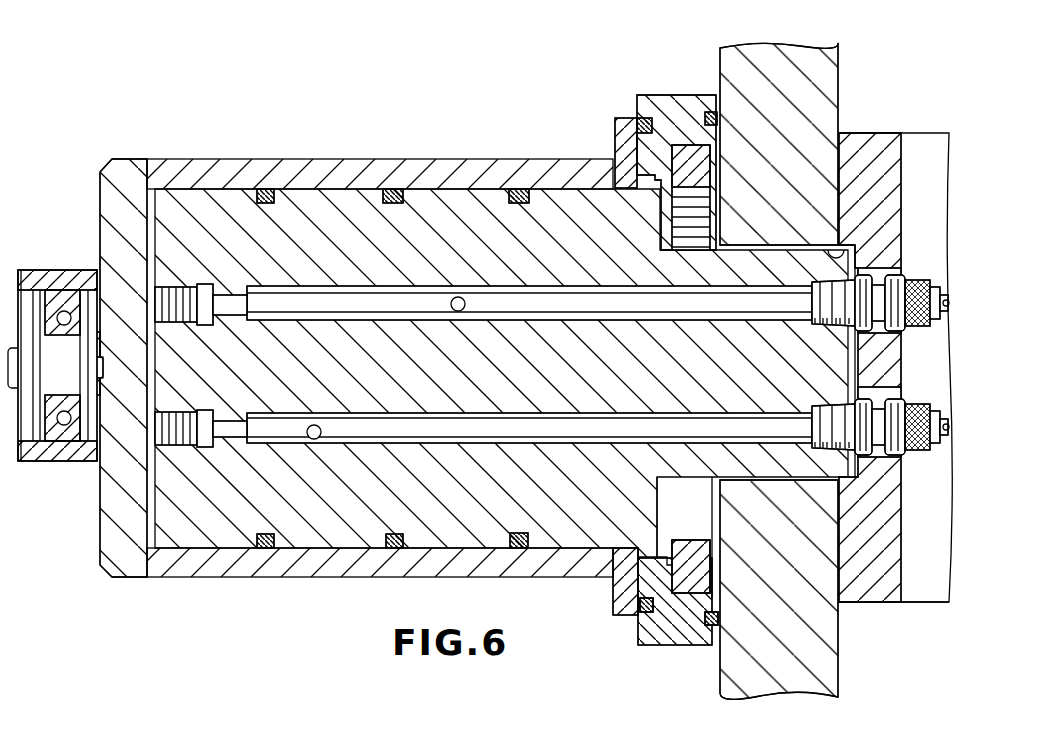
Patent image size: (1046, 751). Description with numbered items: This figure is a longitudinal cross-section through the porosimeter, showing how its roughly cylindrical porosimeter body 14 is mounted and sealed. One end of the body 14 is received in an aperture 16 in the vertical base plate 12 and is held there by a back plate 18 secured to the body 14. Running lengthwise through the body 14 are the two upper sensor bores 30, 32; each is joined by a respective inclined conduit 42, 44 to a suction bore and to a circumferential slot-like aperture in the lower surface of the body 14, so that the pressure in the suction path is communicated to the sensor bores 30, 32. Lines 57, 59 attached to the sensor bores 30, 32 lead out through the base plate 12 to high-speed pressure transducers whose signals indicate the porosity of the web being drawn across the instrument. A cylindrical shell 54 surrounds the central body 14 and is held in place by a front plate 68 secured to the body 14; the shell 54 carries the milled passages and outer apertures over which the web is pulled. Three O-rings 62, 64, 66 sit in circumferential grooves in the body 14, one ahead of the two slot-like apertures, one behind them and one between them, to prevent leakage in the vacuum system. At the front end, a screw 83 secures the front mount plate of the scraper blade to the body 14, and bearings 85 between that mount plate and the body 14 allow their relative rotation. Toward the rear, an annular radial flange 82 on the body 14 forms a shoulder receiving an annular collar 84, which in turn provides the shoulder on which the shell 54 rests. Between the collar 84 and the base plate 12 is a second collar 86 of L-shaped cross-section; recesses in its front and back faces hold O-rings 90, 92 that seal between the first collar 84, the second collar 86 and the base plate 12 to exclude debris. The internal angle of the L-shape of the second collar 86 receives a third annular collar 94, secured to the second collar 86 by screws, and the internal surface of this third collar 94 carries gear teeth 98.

The base plate 12 is at (838, 57).
The porosimeter body 14 is at (563, 552).
The aperture 16 is at (843, 247).
The back plate 18 is at (885, 595).
The upper bore 30 is at (432, 443).
The upper bore 32 is at (557, 186).
The inclined conduit 42 is at (318, 440).
The inclined conduit 44 is at (458, 297).
The cylindrical shell 54 is at (182, 570).
The line 57 is at (880, 448).
The line 59 is at (937, 272).
The O-ring 62 is at (265, 549).
The O-ring 64 is at (390, 549).
The O-ring 66 is at (566, 533).
The front plate 68 is at (105, 548).
The annular radial flange 82 is at (647, 551).
The screw 83 is at (12, 335).
The annular collar 84 is at (615, 612).
The bearings 85 is at (62, 305).
The second collar 86 is at (668, 645).
The O-ring 90 is at (640, 628).
The O-ring 92 is at (698, 635).
The annular collar 94 is at (693, 148).
The gear teeth 98 is at (687, 212).